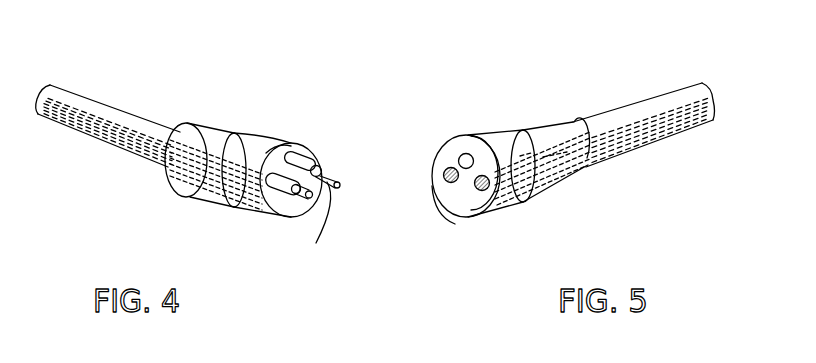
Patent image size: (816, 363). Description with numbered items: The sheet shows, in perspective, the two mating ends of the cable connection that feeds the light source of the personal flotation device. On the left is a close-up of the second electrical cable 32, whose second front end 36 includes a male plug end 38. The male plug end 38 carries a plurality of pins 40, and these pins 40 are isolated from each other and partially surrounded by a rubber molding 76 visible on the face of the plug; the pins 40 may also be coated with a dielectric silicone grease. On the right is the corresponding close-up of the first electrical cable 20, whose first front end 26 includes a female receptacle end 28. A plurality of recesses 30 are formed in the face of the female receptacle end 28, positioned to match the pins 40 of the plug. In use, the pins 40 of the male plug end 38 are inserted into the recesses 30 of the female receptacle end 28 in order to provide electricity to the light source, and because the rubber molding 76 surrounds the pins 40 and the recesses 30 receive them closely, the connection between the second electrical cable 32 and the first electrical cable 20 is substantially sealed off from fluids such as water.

In FIG. 4, the second electrical cable 32 is at (122, 70).
In FIG. 4, the second front end 36 is at (202, 183).
In FIG. 4, the male plug end 38 is at (247, 208).
In FIG. 4, the rubber molding 76 is at (282, 205).
In FIG. 4, the plurality of pins 40 is at (317, 197).
In FIG. 5, the first electrical cable 20 is at (630, 68).
In FIG. 5, the first front end 26 is at (552, 172).
In FIG. 5, the female receptacle end 28 is at (509, 193).
In FIG. 5, the plurality of recesses 30 is at (448, 183).